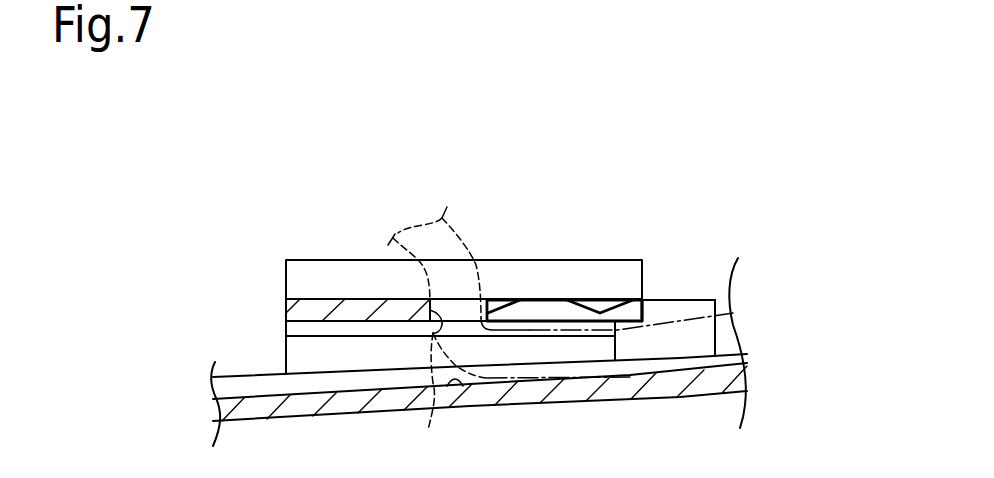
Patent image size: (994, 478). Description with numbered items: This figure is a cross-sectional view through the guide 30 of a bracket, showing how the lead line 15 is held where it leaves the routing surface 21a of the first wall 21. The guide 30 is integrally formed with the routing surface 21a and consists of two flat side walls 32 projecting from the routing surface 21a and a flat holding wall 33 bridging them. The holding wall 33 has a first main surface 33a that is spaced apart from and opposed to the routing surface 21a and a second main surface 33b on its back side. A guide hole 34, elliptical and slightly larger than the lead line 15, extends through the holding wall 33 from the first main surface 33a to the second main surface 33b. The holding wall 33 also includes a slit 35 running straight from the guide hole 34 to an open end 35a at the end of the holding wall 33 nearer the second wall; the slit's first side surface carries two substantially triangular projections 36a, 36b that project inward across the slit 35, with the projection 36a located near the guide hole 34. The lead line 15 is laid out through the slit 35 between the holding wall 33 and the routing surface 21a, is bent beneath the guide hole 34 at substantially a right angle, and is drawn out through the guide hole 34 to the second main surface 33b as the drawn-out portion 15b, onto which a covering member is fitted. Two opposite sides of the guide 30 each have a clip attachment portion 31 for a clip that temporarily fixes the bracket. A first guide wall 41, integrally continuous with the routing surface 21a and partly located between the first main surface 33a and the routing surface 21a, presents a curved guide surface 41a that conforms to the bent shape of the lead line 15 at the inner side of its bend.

The lead line 15 is at (560, 340).
The drawn-out portion 15b is at (444, 220).
The first wall 21 is at (563, 395).
The routing surface 21a is at (465, 408).
The guide 30 is at (312, 298).
The clip attachment portion 31 is at (327, 260).
The side wall 32 is at (300, 350).
The holding wall 33 is at (333, 298).
The first main surface 33a is at (303, 321).
The second main surface 33b is at (363, 298).
The guide hole 34 is at (430, 328).
The slit 35 is at (542, 299).
The open end 35a is at (643, 312).
The projection 36a is at (498, 299).
The projection 36b is at (598, 299).
The first guide wall 41 is at (660, 299).
The guide surface 41a is at (697, 305).